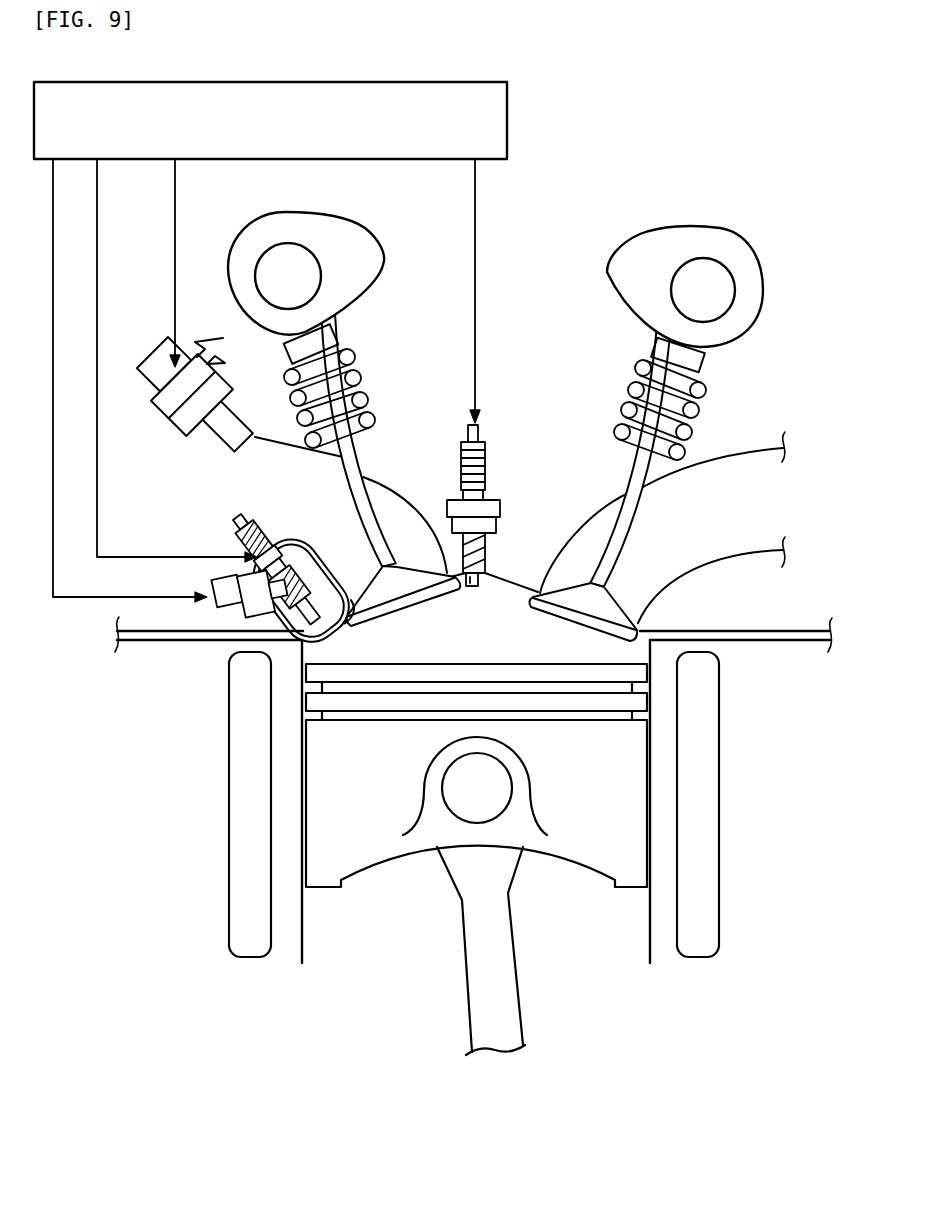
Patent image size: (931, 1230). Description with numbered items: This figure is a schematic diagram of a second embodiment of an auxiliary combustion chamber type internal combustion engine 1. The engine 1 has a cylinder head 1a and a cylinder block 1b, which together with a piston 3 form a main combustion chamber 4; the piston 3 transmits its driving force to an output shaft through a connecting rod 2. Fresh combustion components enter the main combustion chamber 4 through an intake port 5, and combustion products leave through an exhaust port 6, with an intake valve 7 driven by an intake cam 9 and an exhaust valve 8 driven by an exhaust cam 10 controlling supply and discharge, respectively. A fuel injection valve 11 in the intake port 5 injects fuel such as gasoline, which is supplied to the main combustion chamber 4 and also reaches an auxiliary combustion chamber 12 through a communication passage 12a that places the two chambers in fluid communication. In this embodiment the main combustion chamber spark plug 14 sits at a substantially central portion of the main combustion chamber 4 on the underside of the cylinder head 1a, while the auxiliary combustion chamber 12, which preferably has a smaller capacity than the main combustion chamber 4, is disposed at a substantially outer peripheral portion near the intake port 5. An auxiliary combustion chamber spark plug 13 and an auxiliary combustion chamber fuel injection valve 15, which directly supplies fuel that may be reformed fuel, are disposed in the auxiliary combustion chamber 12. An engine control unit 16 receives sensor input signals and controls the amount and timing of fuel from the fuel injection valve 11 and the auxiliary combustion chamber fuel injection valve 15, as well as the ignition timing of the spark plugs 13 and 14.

The internal combustion engine 1 is at (183, 1017).
The cylinder head 1a is at (473, 542).
The cylinder block 1b is at (473, 801).
The connecting rod 2 is at (487, 997).
The piston 3 is at (582, 860).
The main combustion chamber 4 is at (531, 646).
The intake port 5 is at (240, 530).
The exhaust port 6 is at (716, 485).
The intake valve 7 is at (376, 592).
The exhaust valve 8 is at (605, 603).
The intake cam 9 is at (352, 233).
The exhaust cam 10 is at (646, 243).
The fuel injection valve 11 is at (143, 352).
The auxiliary combustion chamber 12 is at (302, 637).
The communication passage 12a is at (347, 622).
The auxiliary combustion chamber spark plug 13 is at (268, 548).
The main combustion chamber spark plug 14 is at (493, 455).
The auxiliary combustion chamber fuel injection valve 15 is at (243, 618).
The engine control unit 16 is at (508, 118).